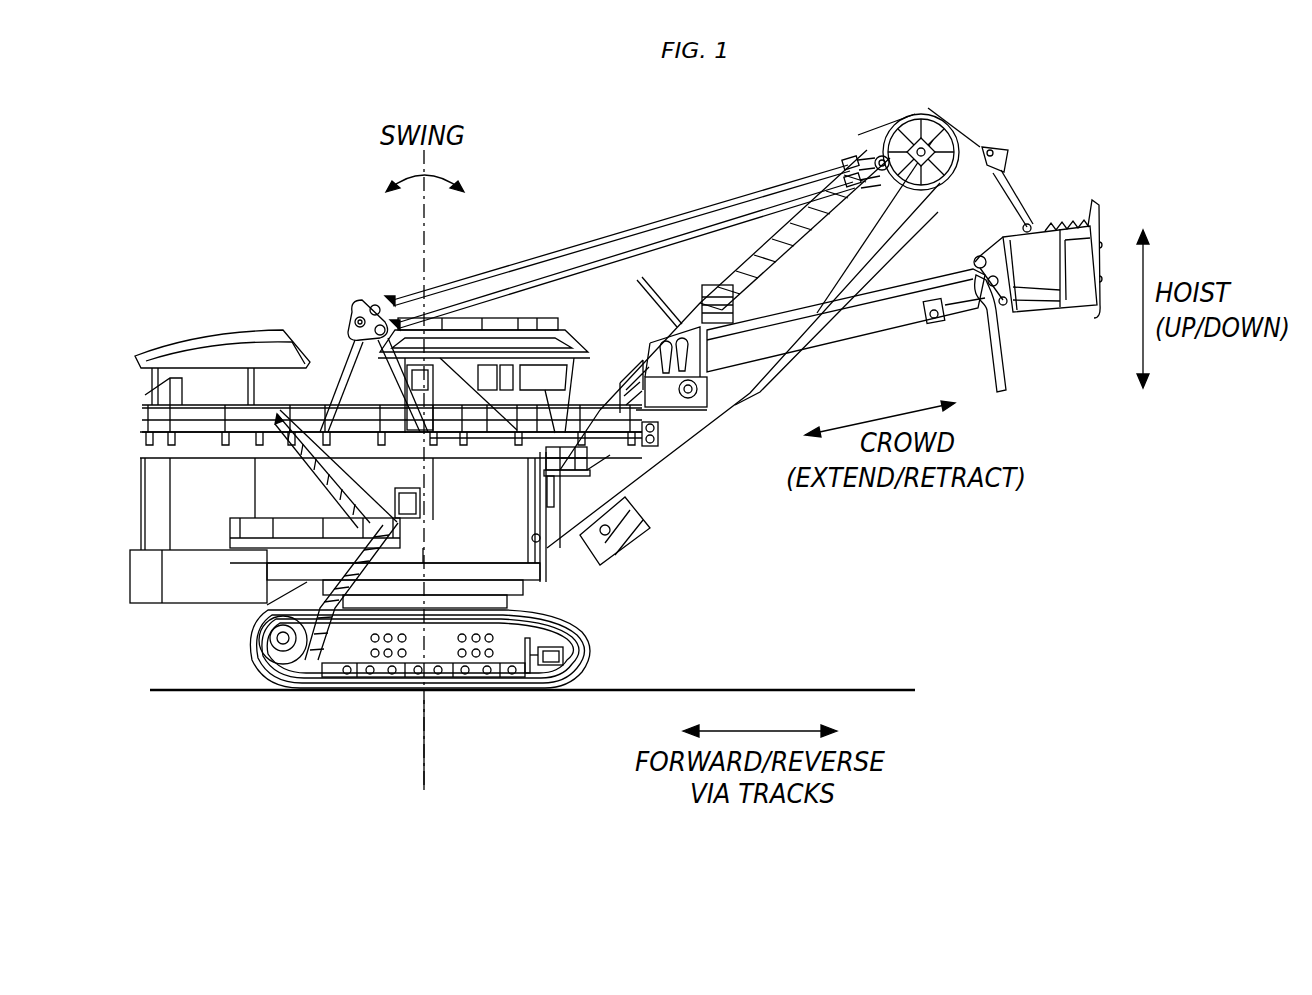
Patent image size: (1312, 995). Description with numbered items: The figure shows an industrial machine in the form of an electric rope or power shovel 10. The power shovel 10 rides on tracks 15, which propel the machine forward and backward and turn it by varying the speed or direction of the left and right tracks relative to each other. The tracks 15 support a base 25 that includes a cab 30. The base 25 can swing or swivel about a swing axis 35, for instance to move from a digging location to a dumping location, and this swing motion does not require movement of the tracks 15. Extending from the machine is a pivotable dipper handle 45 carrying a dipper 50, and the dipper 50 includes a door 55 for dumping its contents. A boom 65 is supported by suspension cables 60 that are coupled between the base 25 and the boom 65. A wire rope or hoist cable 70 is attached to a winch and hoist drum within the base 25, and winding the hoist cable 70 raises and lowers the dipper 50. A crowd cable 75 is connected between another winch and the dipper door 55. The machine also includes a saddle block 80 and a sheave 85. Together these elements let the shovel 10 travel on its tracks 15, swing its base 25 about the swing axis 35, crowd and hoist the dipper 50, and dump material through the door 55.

The power shovel 10 is at (190, 216).
The tracks 15 is at (582, 652).
The base 25 is at (193, 525).
The cab 30 is at (540, 335).
The swing axis 35 is at (415, 727).
The dipper handle 45 is at (863, 297).
The dipper 50 is at (1048, 232).
The door 55 is at (1003, 357).
The suspension cables 60 is at (525, 252).
The boom 65 is at (890, 194).
The hoist cable 70 is at (862, 138).
The crowd cable 75 is at (795, 373).
The saddle block 80 is at (655, 340).
The sheave 85 is at (942, 118).